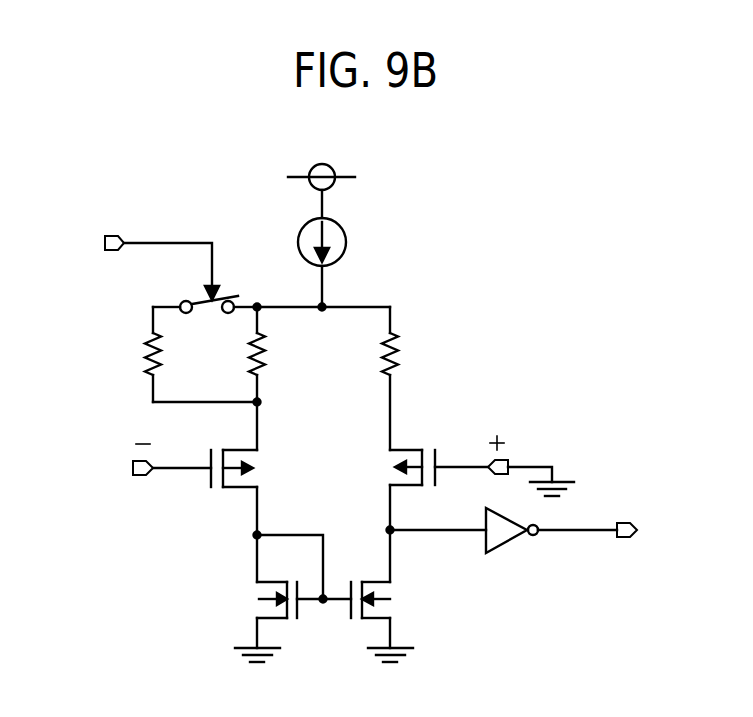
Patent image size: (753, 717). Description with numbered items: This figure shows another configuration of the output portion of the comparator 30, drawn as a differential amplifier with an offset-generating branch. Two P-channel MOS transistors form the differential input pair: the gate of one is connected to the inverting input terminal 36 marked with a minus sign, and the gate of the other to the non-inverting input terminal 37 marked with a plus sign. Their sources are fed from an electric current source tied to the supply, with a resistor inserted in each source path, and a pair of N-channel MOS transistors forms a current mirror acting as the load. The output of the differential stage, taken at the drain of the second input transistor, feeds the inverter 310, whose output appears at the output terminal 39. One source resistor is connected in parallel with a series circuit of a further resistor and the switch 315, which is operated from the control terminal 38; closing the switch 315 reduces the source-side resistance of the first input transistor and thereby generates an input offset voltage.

The comparator 30 is at (421, 236).
The inverting input terminal 36 is at (147, 478).
The non-inverting input terminal 37 is at (506, 461).
The control terminal 38 is at (108, 236).
The output terminal 39 is at (624, 540).
The inverter 310 is at (508, 546).
The switch 315 is at (181, 295).